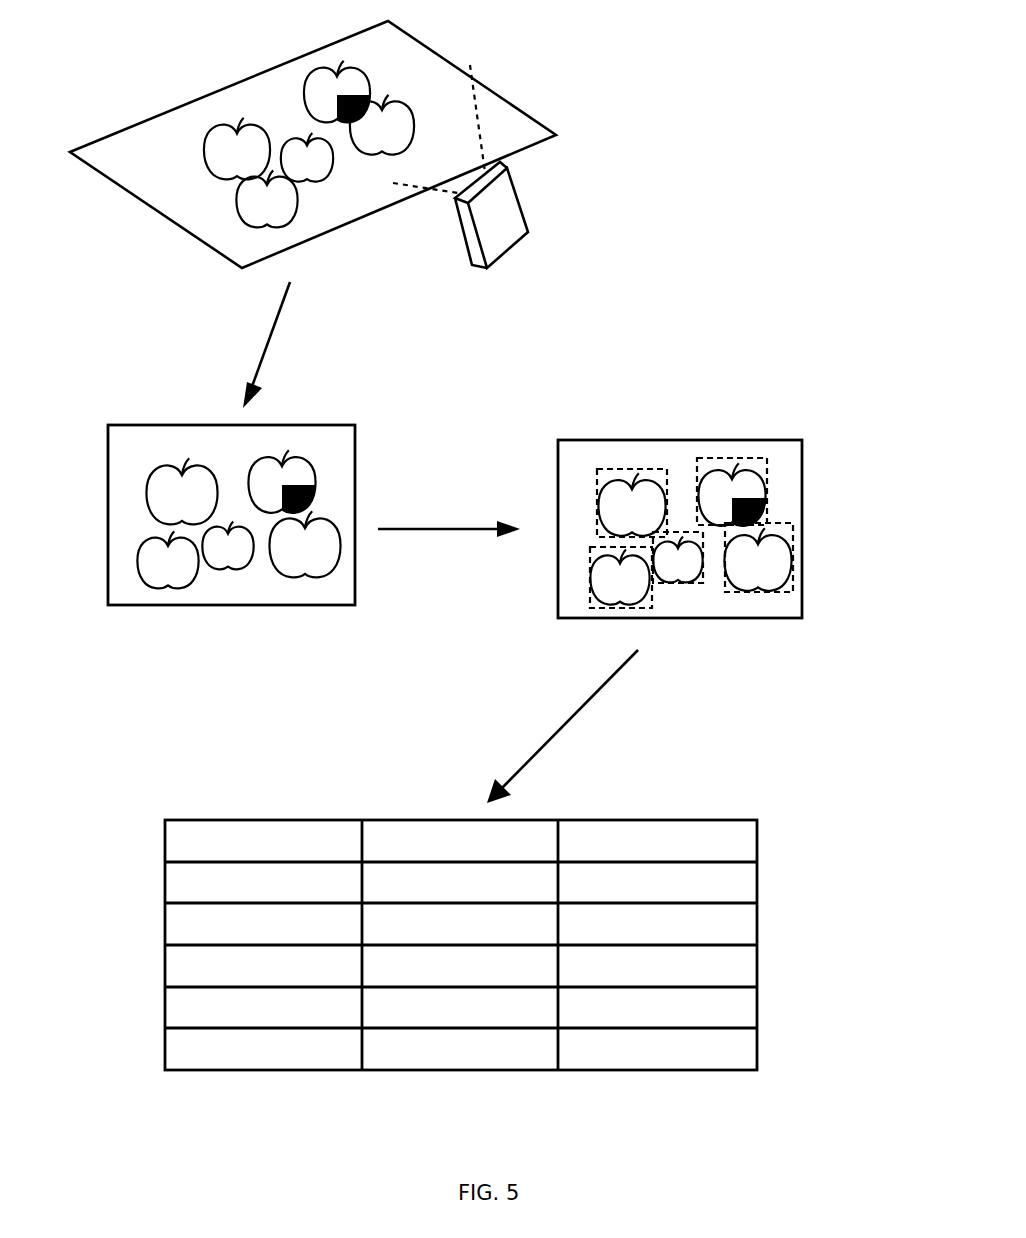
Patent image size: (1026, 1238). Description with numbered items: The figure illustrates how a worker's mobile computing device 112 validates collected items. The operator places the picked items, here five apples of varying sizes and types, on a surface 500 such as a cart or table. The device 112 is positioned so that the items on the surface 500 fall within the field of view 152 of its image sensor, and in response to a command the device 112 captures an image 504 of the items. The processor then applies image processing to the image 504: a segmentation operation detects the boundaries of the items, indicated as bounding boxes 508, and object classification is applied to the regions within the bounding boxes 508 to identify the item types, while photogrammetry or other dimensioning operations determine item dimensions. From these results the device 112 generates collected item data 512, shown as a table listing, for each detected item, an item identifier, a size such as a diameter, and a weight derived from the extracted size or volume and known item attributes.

The surface 500 is at (125, 127).
The field of view 152 is at (483, 140).
The mobile computing device 112 is at (538, 237).
The image 504 is at (108, 427).
The bounding boxes 508 is at (793, 533).
The collected item data 512 is at (818, 842).